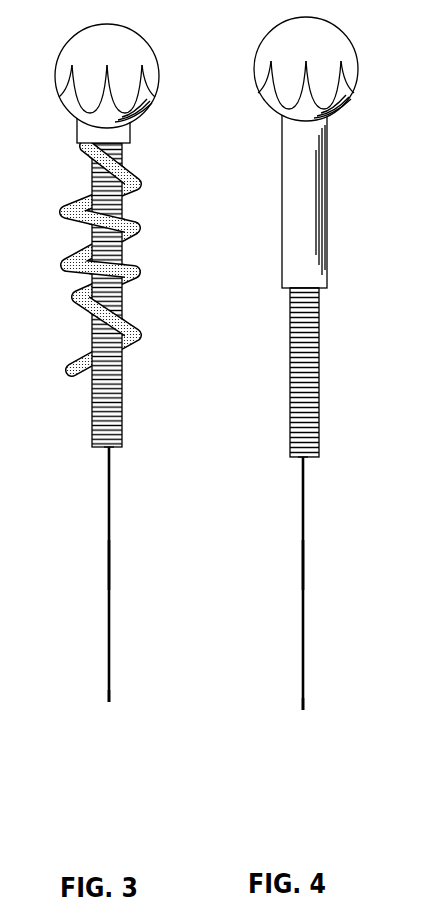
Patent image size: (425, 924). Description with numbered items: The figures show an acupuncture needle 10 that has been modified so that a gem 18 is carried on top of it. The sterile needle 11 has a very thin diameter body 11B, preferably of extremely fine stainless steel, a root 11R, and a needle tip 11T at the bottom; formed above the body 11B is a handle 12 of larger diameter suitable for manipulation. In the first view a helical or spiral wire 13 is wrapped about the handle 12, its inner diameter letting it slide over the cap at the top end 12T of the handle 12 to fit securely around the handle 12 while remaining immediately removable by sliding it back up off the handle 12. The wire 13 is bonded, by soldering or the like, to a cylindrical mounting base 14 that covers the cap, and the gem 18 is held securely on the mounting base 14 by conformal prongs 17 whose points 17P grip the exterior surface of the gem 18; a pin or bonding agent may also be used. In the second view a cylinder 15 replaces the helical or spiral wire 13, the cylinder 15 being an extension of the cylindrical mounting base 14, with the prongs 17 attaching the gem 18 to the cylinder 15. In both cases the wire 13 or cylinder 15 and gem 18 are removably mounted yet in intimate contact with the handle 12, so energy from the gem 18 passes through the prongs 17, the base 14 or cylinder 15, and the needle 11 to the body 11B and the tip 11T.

In FIG. 3, the acupuncture needle 10 is at (95, 768).
In FIG. 4, the acupuncture needle 10 is at (285, 768).
In FIG. 3, the needle 11 is at (127, 627).
In FIG. 4, the needle 11 is at (316, 630).
In FIG. 3, the needle tip 11T is at (108, 702).
In FIG. 4, the needle tip 11T is at (303, 710).
In FIG. 3, the body 11B is at (108, 562).
In FIG. 4, the body 11B is at (303, 562).
In FIG. 3, the root 11R is at (108, 449).
In FIG. 4, the root 11R is at (303, 459).
In FIG. 3, the handle 12 is at (92, 430).
In FIG. 4, the handle 12 is at (298, 421).
In FIG. 3, the threaded section top 12T is at (142, 160).
In FIG. 4, the threaded section top 12T is at (338, 142).
In FIG. 3, the helical or spiral wire 13 is at (135, 337).
In FIG. 3, the cylindrical mounting base 14 is at (131, 131).
In FIG. 4, the cylinder 15 is at (313, 193).
In FIG. 3, the prongs 17 is at (147, 104).
In FIG. 4, the prongs 17 is at (348, 101).
In FIG. 3, the petal point 17P is at (103, 92).
In FIG. 4, the petal point 17P is at (302, 83).
In FIG. 3, the gem 18 is at (140, 58).
In FIG. 4, the gem 18 is at (335, 55).